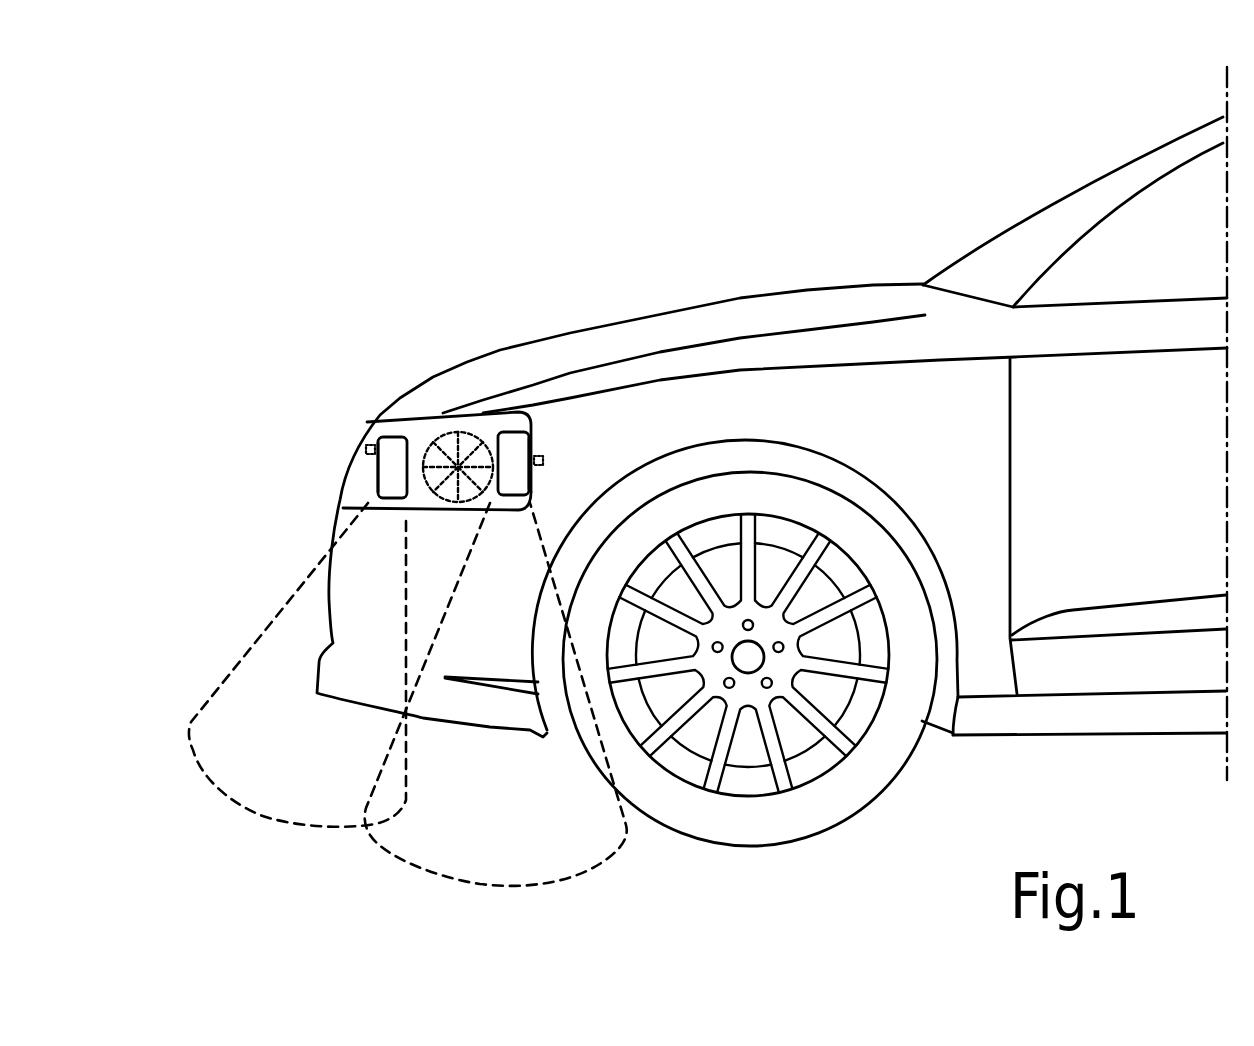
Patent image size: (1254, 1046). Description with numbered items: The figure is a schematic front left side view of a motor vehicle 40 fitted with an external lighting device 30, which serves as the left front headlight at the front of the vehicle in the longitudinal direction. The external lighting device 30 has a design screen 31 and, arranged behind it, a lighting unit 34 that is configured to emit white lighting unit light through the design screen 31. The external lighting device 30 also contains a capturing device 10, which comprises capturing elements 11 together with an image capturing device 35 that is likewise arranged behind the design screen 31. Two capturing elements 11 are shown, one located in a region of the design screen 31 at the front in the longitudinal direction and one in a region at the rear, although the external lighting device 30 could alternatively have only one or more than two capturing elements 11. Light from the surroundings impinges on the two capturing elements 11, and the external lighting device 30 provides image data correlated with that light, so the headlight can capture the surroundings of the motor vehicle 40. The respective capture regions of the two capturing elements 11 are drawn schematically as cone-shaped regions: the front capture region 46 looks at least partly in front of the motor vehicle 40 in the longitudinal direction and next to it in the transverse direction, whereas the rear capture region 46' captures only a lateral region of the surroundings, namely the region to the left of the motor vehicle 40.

The capturing device 10 is at (375, 472).
The capturing element 11 is at (392, 458).
The external lighting device 30 is at (486, 402).
The design screen 31 is at (450, 512).
The lighting unit 34 is at (436, 455).
The image capturing device 35 is at (368, 445).
The motor vehicle 40 is at (762, 258).
The capture region 46 is at (291, 680).
The capture region 46' is at (494, 714).